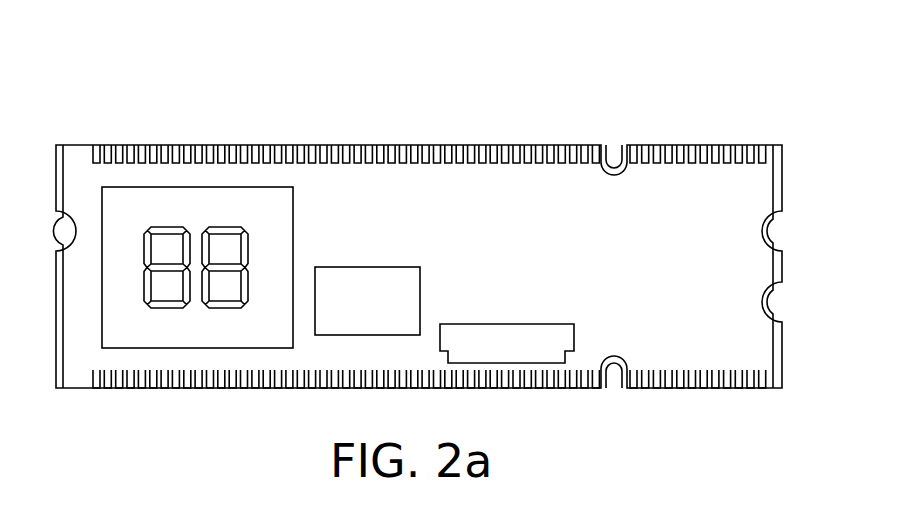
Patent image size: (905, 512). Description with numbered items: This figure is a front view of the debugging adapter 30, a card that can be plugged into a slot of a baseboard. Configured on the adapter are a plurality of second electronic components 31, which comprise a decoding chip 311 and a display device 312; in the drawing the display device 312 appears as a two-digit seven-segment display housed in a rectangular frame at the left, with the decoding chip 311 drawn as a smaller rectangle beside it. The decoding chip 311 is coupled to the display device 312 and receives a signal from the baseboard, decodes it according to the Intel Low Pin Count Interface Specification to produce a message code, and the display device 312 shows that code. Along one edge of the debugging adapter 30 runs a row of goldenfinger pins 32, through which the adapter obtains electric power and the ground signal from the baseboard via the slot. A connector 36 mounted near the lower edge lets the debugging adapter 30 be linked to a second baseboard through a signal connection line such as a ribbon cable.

The debugging adapter 30 is at (607, 200).
The second electronic components 31 is at (457, 60).
The decoding chip 311 is at (385, 281).
The display device 312 is at (252, 213).
The goldenfinger pins 32 is at (703, 388).
The connector 36 is at (526, 343).